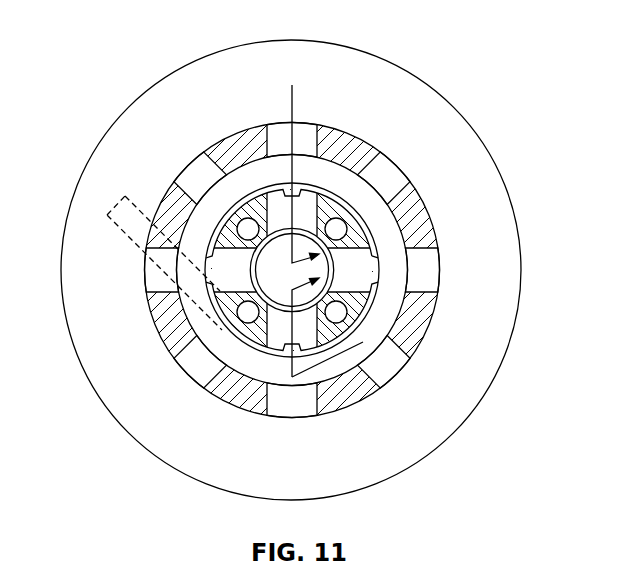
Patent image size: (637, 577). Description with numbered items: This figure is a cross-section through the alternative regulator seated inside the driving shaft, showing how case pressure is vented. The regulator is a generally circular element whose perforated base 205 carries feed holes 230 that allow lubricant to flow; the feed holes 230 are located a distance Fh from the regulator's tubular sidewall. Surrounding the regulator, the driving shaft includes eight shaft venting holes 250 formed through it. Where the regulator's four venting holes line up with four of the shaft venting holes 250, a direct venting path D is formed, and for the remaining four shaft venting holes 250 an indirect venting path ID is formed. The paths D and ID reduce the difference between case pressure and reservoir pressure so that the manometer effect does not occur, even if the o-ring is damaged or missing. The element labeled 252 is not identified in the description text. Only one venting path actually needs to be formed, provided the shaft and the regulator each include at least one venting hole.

The perforated base 205 is at (318, 207).
The feed holes 230 is at (337, 227).
The shaft venting holes 250 is at (423, 272).
The hub cross member 252 is at (357, 270).
The direct venting path D is at (291, 108).
The indirect venting path ID is at (363, 342).
The distance from sidewall Fh is at (108, 212).